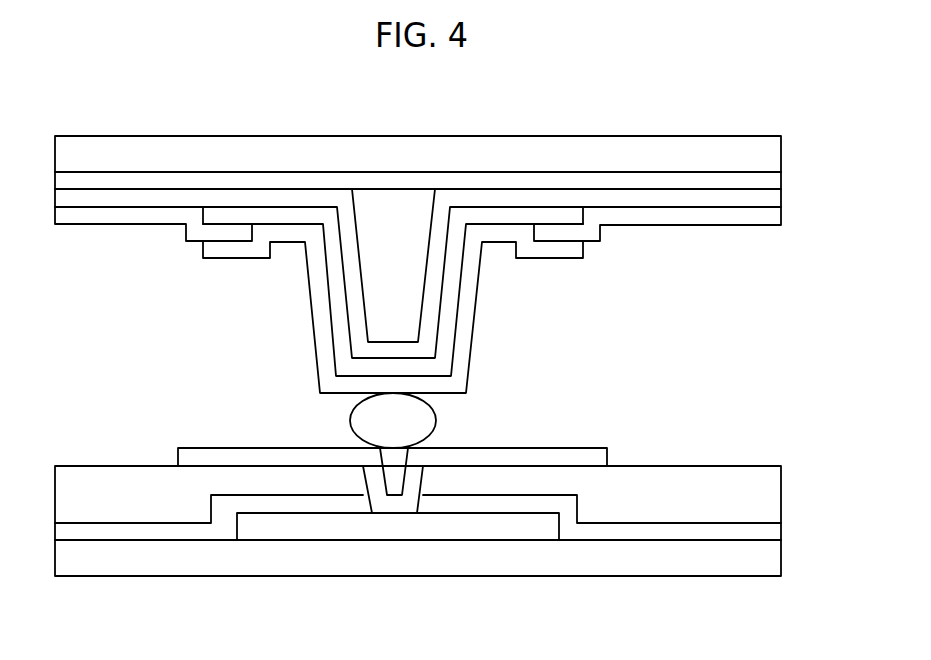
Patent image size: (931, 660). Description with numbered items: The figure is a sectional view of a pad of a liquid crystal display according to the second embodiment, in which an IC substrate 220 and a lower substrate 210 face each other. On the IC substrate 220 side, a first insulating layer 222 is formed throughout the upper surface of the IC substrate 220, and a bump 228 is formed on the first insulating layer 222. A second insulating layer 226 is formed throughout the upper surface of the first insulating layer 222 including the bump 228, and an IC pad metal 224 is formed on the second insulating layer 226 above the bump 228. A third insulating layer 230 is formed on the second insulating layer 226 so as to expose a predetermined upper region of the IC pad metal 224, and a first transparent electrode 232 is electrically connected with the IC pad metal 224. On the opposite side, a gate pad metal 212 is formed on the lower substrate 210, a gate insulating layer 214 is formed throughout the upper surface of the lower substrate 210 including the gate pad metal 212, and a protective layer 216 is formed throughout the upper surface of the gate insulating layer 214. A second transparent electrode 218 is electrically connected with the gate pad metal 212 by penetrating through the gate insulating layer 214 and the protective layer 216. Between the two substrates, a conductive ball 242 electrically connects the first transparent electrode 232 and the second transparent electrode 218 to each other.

The lower substrate 210 is at (775, 559).
The gate pad metal 212 is at (542, 528).
The gate insulating layer 214 is at (775, 534).
The protective layer 216 is at (775, 496).
The second transparent electrode 218 is at (607, 462).
The IC substrate 220 is at (775, 157).
The first insulating layer 222 is at (775, 179).
The IC pad metal 224 is at (541, 216).
The second insulating layer 226 is at (775, 198).
The bump 228 is at (402, 198).
The third insulating layer 230 is at (775, 218).
The first transparent electrode 232 is at (467, 318).
The conductive ball 242 is at (428, 421).